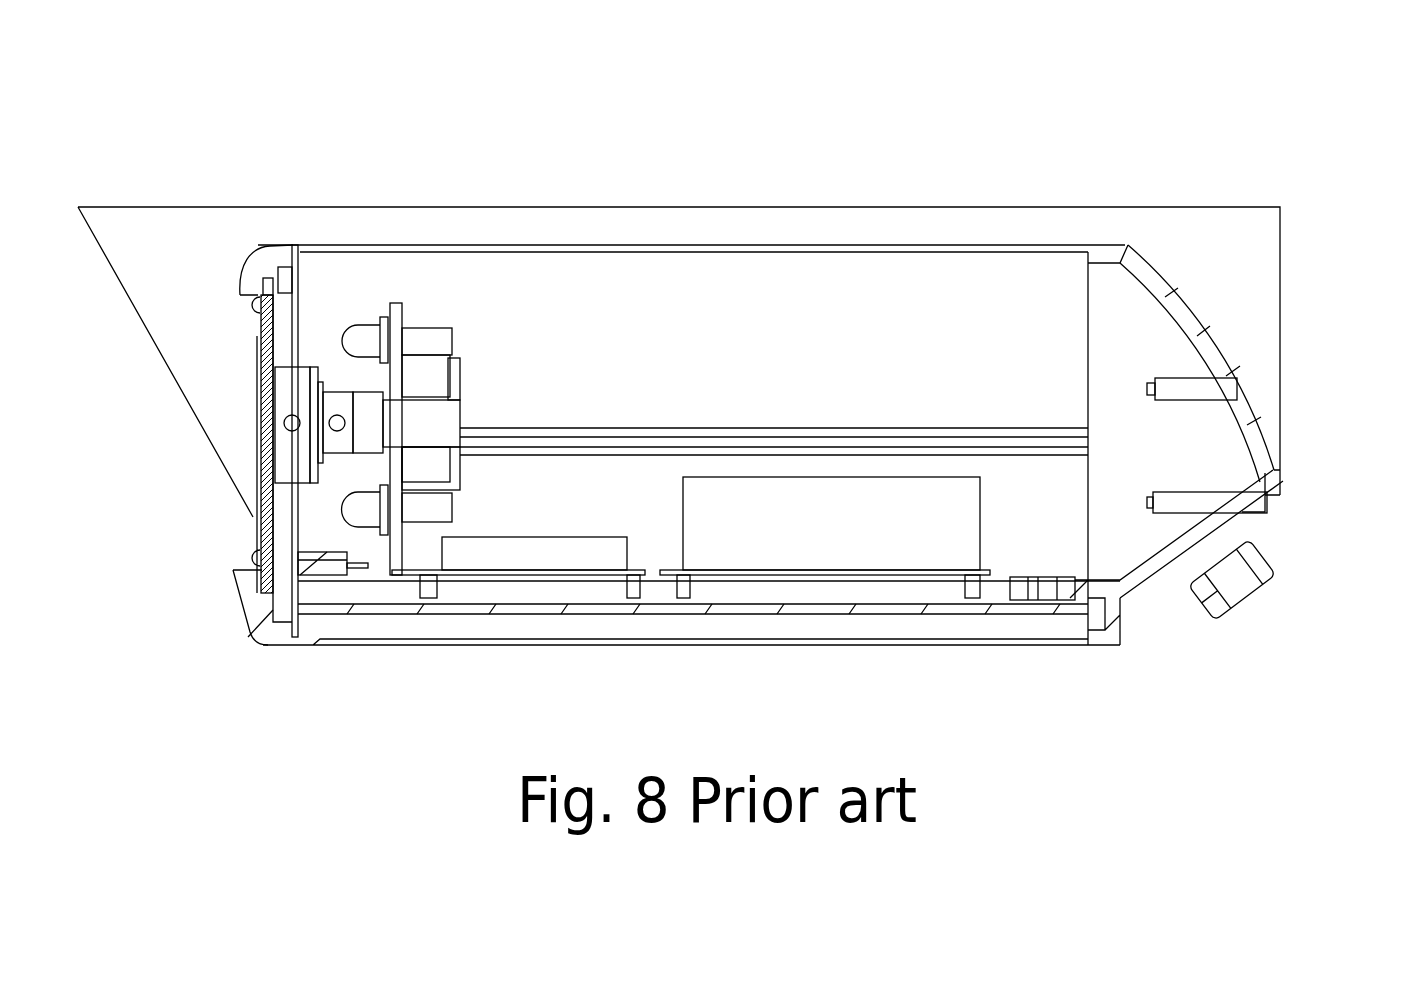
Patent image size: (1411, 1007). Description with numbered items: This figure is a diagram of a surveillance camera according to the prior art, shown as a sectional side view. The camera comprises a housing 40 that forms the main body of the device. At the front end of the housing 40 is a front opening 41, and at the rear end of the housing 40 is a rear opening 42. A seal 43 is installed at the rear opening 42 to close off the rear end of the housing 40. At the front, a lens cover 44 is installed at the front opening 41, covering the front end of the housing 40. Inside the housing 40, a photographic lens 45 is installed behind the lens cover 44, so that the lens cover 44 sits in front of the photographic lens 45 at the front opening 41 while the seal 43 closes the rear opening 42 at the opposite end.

The housing 40 is at (1238, 124).
The front opening 41 is at (287, 303).
The rear opening 42 is at (1078, 297).
The seal 43 is at (1137, 577).
The lens cover 44 is at (253, 607).
The photographic lens 45 is at (343, 400).